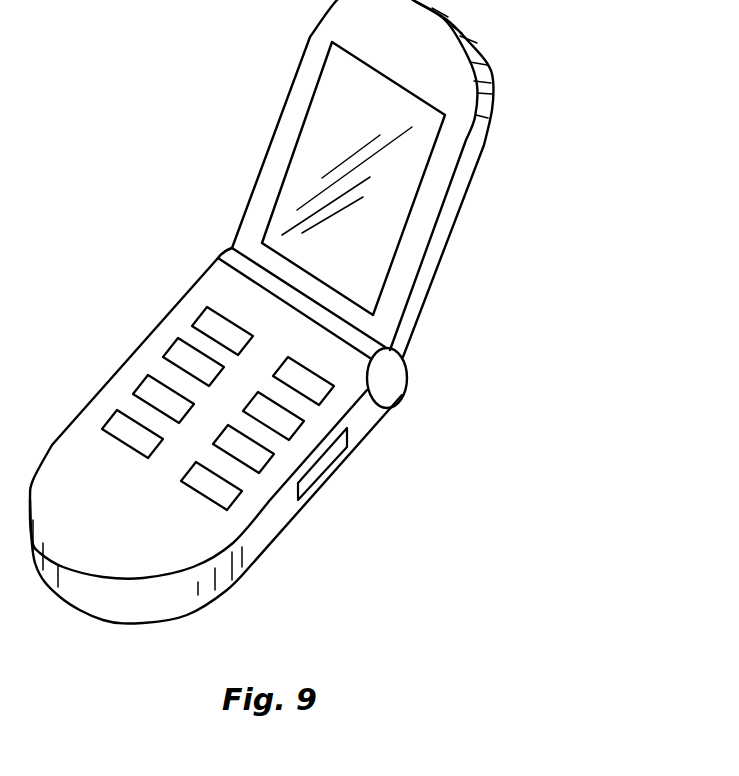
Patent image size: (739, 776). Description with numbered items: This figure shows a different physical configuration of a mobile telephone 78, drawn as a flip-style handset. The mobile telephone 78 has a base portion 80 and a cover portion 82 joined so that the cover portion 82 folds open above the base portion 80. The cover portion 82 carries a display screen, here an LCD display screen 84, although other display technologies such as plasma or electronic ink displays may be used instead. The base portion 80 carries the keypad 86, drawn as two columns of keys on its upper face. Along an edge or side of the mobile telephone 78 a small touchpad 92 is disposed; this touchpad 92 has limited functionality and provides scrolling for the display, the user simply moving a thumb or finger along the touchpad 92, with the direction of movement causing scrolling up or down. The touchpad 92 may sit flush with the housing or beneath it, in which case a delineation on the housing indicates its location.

The mobile telephone 78 is at (336, 312).
The base portion 80 is at (250, 547).
The cover portion 82 is at (453, 200).
The LCD display screen 84 is at (372, 255).
The keypad 86 is at (183, 285).
The touchpad 92 is at (325, 462).